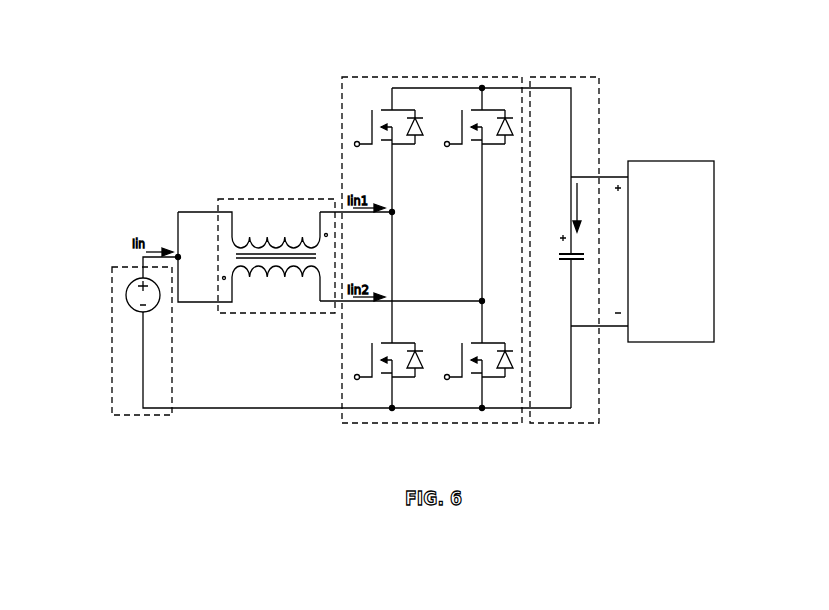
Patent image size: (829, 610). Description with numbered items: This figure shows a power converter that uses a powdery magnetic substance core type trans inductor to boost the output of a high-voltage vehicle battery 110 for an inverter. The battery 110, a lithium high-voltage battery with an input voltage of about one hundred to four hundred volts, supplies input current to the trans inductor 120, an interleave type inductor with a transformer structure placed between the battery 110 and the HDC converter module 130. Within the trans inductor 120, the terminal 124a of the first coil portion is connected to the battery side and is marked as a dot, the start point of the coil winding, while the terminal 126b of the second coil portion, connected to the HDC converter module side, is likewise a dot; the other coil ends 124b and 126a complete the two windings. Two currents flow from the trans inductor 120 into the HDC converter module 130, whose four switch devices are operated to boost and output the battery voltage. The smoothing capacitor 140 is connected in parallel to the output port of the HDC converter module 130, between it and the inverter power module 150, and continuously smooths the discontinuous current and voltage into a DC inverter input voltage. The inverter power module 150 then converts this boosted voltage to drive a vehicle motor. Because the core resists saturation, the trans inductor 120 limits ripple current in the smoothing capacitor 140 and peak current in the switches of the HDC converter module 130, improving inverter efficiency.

The battery 110 is at (132, 281).
The trans inductor 120 is at (252, 248).
The terminal of the first coil portion 124a is at (223, 313).
The second winding of trans inductor 124b is at (320, 313).
The first winding terminal (dot end) 126a is at (226, 212).
The terminal of the second coil portion 126b is at (326, 212).
The HDC converter module 130 is at (362, 76).
The smoothing capacitor 140 is at (579, 249).
The inverter power module 150 is at (661, 161).